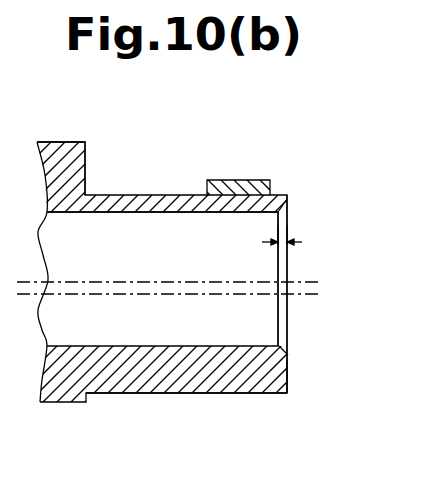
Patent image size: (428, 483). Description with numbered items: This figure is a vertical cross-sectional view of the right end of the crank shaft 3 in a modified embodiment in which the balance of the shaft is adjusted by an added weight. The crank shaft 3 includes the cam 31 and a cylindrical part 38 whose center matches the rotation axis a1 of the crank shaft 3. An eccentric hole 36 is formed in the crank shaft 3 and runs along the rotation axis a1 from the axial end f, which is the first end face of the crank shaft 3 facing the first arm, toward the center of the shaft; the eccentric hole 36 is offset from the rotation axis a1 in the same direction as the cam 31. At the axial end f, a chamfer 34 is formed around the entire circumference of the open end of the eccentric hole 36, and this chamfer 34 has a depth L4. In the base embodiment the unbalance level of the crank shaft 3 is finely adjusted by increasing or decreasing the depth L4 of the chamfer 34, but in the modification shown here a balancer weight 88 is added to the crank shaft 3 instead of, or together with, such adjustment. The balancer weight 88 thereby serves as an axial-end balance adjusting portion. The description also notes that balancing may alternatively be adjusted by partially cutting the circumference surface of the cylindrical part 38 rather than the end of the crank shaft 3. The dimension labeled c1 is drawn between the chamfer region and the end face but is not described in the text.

The crank shaft 3 is at (148, 194).
The cam 31 is at (66, 143).
The chamfer 34 is at (290, 347).
The eccentric hole 36 is at (202, 212).
The cylindrical part 38 is at (200, 395).
The balancer weight 88 is at (233, 180).
The axial end f is at (290, 370).
The depth of chamfer L4 is at (284, 236).
The clearance c1 is at (302, 278).
The rotation axis a1 is at (302, 294).